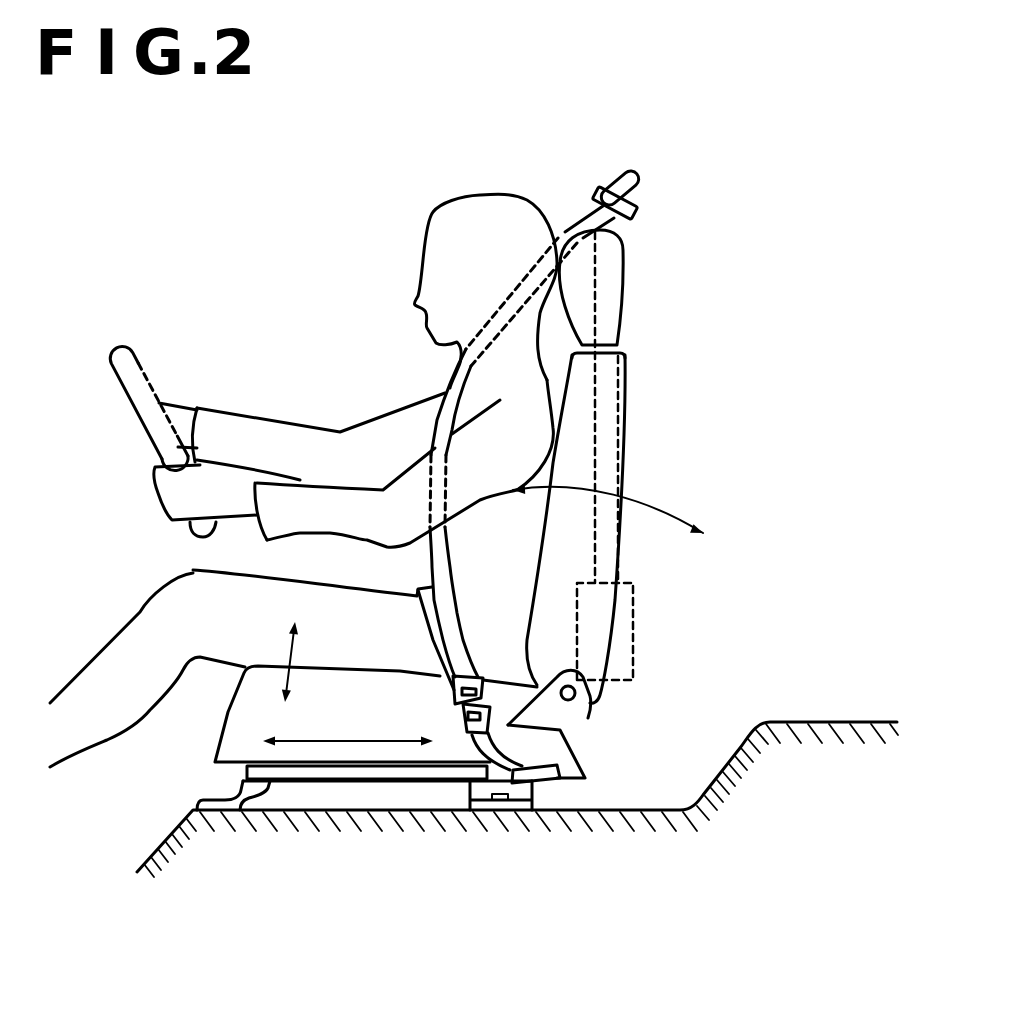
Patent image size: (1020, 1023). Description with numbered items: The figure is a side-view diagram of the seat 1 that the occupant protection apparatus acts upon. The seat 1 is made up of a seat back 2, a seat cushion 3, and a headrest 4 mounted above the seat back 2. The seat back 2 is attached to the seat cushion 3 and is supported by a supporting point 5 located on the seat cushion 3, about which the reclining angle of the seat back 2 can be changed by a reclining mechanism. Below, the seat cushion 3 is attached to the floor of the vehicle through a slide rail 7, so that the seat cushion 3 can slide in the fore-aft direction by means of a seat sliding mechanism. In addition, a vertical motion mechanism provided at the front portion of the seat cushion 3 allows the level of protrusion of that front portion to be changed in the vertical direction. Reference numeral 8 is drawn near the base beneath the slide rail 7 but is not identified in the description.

The seat 1 is at (676, 396).
The seat back 2 is at (580, 543).
The seat cushion 3 is at (234, 721).
The headrest 4 is at (624, 251).
The supporting point 5 is at (575, 700).
The slide rail 7 is at (350, 782).
The seat lifter mechanism 8 is at (417, 792).